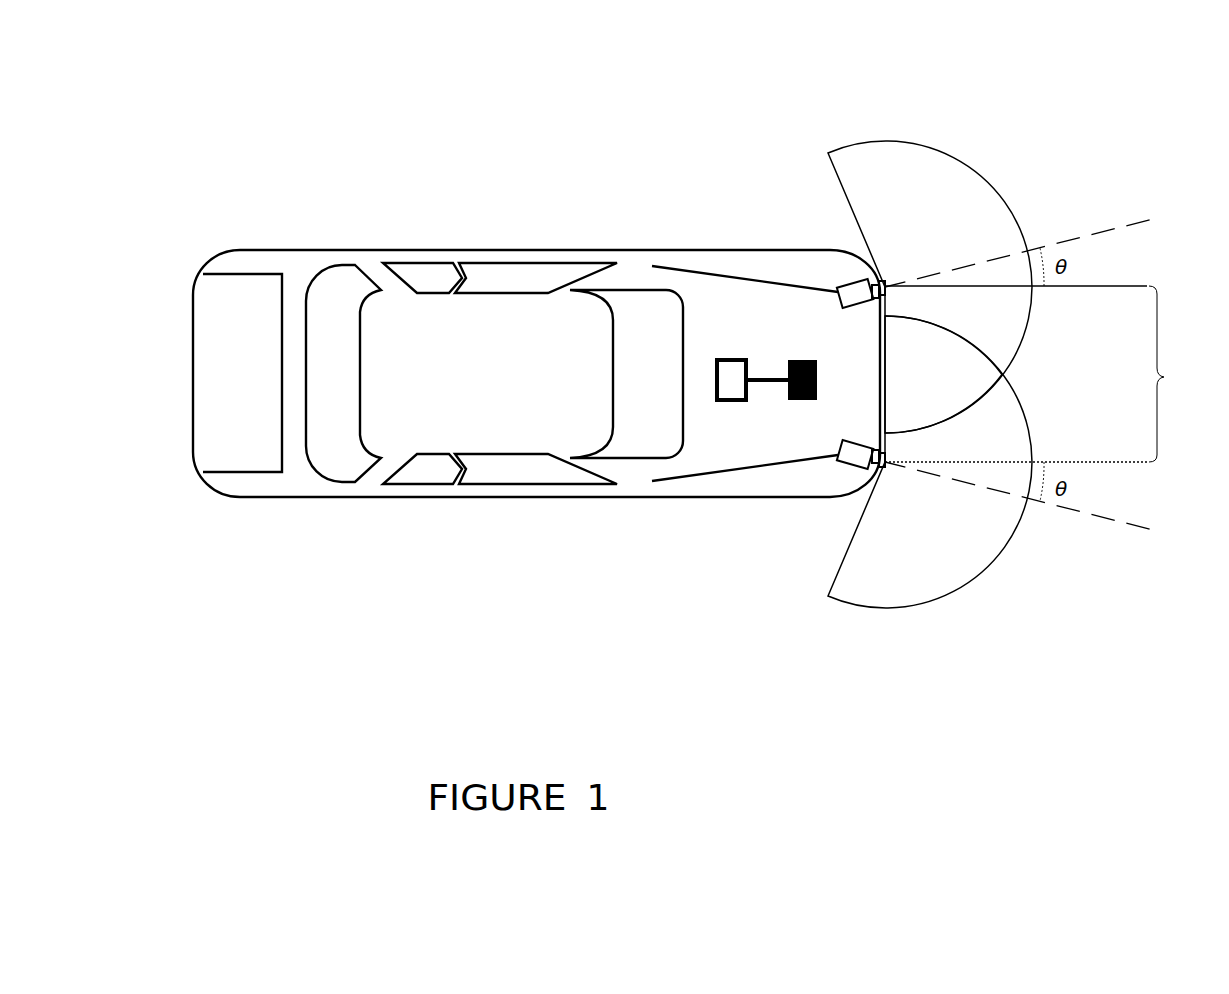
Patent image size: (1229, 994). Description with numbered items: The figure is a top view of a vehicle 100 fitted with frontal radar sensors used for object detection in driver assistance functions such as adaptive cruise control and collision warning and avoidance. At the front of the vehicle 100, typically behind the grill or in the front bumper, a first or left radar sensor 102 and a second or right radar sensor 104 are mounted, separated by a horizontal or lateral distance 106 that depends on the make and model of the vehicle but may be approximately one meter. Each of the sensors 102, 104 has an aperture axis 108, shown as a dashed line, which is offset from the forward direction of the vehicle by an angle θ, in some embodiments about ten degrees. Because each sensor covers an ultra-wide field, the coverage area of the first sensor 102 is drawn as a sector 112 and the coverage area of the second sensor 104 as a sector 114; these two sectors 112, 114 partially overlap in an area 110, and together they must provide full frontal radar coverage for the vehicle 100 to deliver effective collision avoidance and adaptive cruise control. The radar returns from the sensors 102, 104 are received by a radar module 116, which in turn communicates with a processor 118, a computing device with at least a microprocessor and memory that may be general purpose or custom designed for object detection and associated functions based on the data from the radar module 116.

The vehicle 100 is at (328, 250).
The first radar sensor 102 is at (838, 301).
The second radar sensor 104 is at (846, 468).
The lateral distance 106 is at (1048, 374).
The aperture axis 108 is at (1103, 230).
The overlap area 110 is at (978, 376).
The sector 112 is at (898, 140).
The sector 114 is at (926, 606).
The radar module 116 is at (802, 401).
The processor 118 is at (733, 358).